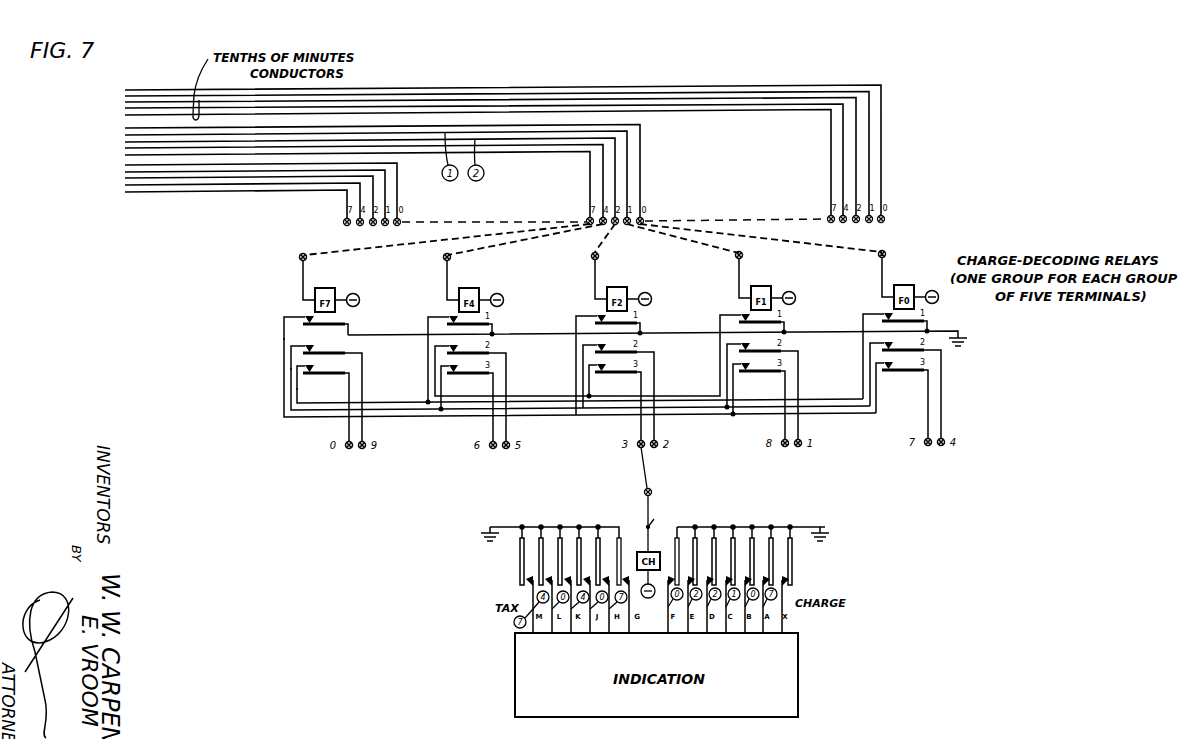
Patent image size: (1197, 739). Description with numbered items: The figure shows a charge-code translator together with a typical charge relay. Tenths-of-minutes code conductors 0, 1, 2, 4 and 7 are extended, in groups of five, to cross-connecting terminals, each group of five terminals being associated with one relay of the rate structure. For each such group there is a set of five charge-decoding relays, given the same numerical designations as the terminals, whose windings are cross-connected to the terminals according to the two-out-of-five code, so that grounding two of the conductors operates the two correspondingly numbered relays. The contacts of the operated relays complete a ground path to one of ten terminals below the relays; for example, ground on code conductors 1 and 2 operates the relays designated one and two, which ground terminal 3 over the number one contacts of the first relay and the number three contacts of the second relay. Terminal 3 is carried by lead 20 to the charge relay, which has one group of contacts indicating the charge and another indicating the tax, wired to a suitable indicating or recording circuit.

The charge terminal 20 is at (646, 472).
The code conductor 1 is at (316, 326).
The code conductor 2 is at (328, 395).
The charge terminal 3 is at (325, 405).
The cross-connecting terminal 0 is at (412, 126).
The cross-connecting terminal 4 is at (497, 145).
The cross-connecting terminal 7 is at (524, 152).